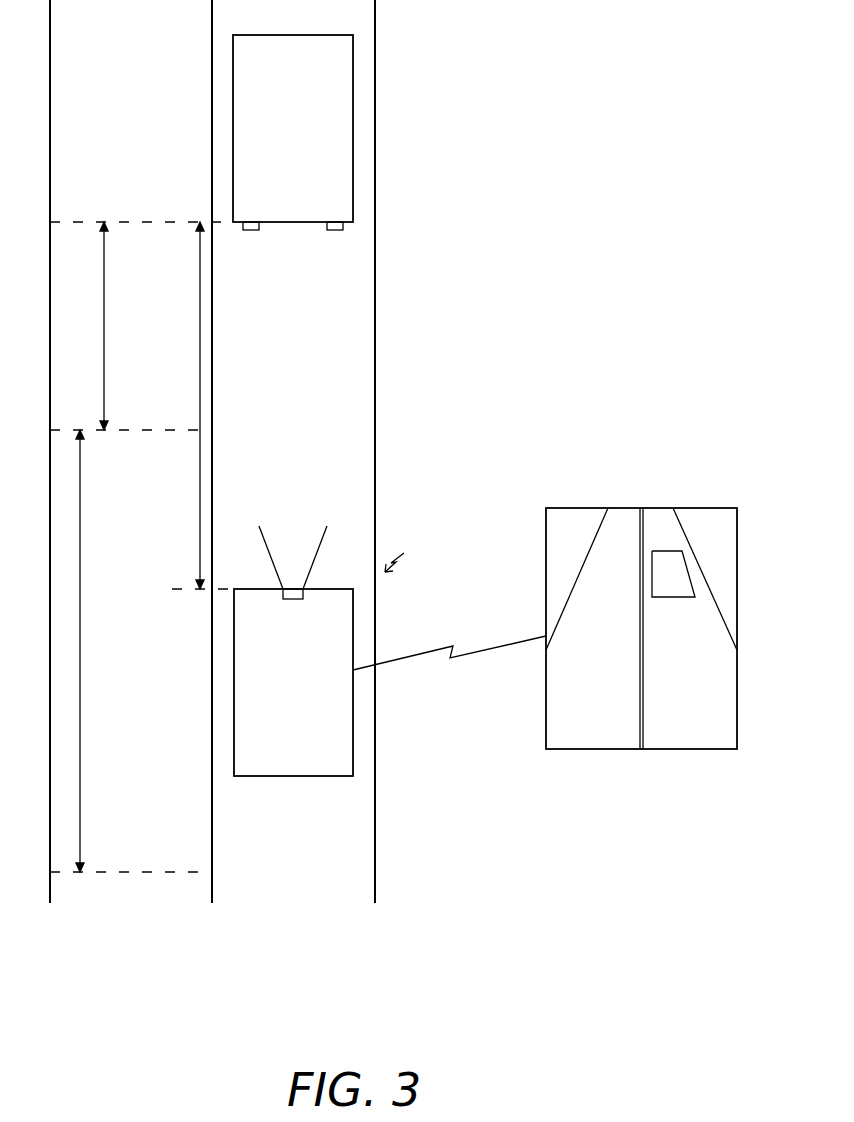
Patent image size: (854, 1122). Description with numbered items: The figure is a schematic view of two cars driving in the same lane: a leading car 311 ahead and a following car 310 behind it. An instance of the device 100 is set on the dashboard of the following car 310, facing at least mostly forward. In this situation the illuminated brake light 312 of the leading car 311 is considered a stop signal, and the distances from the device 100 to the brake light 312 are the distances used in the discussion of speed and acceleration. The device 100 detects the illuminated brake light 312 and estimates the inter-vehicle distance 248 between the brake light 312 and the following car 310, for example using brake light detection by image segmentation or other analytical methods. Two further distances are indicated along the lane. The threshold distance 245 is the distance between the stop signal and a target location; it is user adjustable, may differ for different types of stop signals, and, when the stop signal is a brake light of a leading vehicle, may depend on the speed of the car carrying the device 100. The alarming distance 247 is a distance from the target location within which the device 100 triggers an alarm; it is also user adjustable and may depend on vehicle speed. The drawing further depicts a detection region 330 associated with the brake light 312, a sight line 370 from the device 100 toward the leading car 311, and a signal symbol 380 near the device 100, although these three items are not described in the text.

The device 100 is at (305, 594).
The following car 310 is at (353, 763).
The leading car 311 is at (748, 537).
The brake light 312 is at (748, 620).
The field of view 330 is at (582, 508).
The detection line 370 is at (449, 663).
The wireless signal 380 is at (400, 560).
The threshold distance 245 is at (84, 326).
The alarming distance 247 is at (100, 651).
The inter-vehicle distance 248 is at (179, 405).